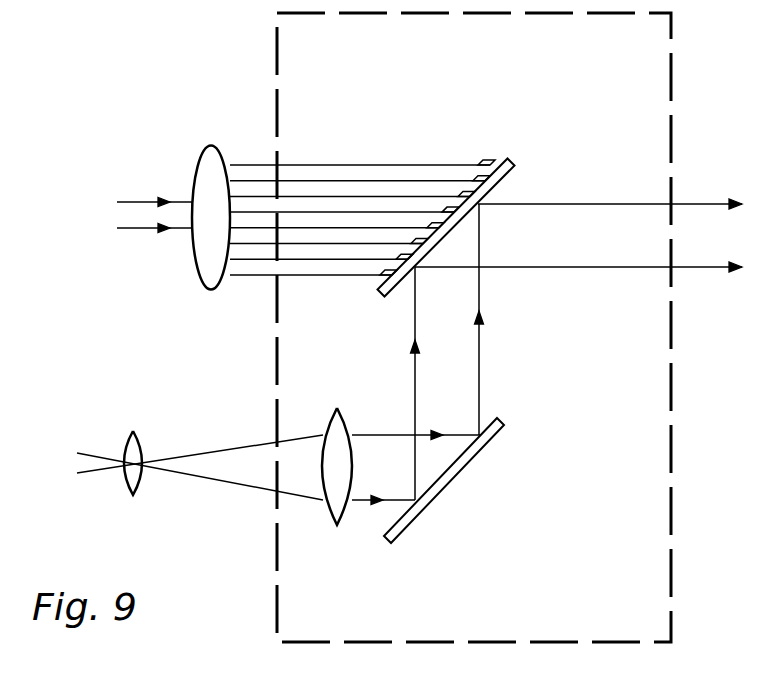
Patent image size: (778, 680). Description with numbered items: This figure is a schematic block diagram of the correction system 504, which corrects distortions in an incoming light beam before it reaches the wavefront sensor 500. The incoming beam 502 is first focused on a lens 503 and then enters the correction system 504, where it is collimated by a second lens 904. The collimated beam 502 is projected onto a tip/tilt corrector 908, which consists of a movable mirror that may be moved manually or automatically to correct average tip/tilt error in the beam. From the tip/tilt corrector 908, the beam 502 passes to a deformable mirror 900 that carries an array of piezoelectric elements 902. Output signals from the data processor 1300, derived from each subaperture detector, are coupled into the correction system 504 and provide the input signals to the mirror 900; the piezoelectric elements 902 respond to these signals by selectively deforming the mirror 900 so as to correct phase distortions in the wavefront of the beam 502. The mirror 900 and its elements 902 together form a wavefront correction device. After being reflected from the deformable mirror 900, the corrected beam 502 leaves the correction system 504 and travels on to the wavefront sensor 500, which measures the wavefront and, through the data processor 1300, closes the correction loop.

The wavefront sensor 500 is at (592, 270).
The incoming beam 502 is at (697, 204).
The lens 503 is at (137, 441).
The correction system 504 is at (412, 630).
The mirror 900 is at (471, 224).
The piezoelectric elements 902 is at (377, 194).
The lens 904 is at (340, 421).
The tip/tilt corrector 908 is at (452, 480).
The data processor 1300 is at (128, 212).